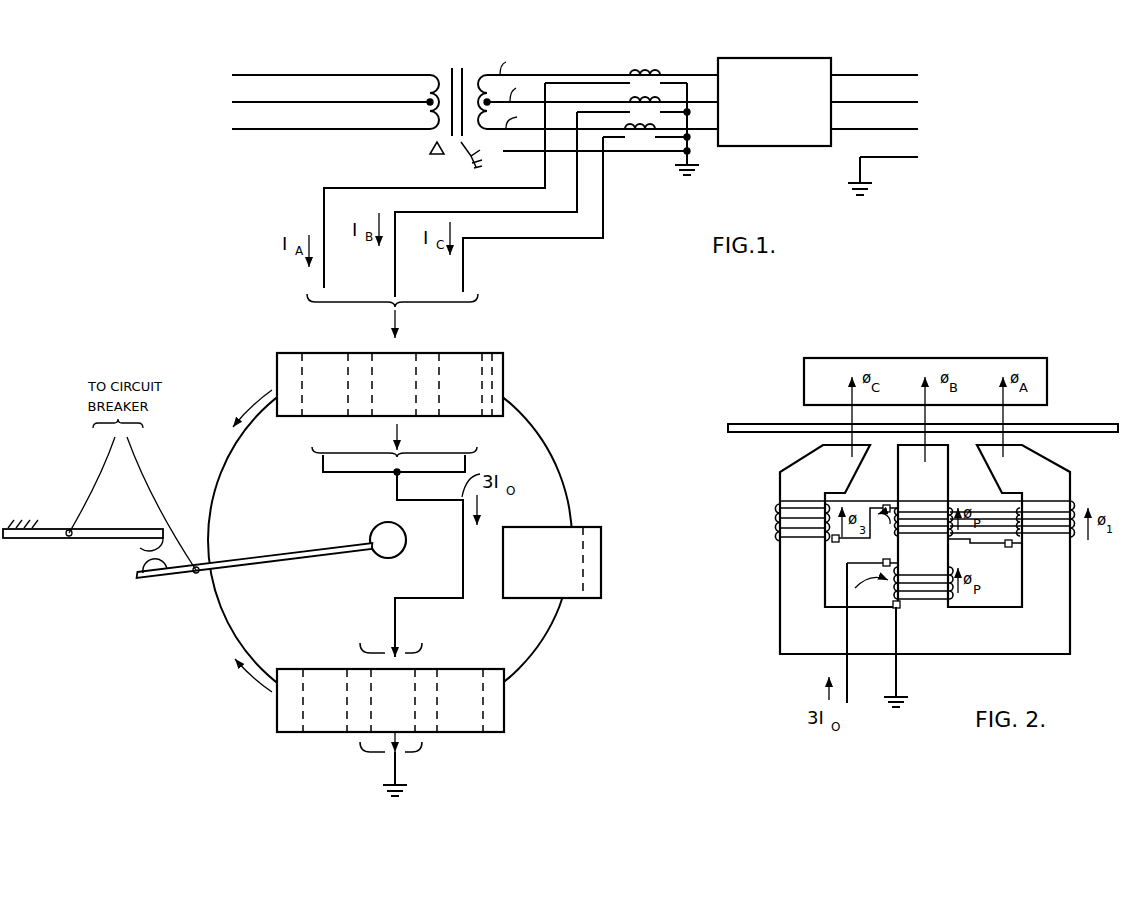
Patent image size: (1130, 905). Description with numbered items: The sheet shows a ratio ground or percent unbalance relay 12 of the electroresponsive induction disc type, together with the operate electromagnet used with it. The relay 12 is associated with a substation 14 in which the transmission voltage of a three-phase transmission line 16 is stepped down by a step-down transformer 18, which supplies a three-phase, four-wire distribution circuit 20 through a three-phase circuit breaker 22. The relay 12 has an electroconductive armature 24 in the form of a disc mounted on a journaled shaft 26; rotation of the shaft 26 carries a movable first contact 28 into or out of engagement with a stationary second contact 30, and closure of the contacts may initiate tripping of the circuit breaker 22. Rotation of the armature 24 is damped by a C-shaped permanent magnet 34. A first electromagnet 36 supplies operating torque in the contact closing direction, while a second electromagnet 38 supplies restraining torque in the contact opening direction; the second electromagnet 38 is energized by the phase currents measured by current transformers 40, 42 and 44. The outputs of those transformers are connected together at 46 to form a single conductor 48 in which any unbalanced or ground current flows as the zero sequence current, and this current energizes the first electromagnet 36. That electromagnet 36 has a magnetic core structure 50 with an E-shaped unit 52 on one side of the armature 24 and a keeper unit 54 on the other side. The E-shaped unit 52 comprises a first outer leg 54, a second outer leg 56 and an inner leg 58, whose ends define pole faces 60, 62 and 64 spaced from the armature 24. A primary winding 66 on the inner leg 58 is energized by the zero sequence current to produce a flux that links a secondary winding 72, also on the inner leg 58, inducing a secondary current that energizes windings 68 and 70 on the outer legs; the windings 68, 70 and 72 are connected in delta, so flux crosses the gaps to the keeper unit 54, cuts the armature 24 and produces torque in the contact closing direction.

In FIG. 1, the ratio ground relay 12 is at (610, 485).
In FIG. 1, the substation 14 is at (570, 66).
In FIG. 1, the three-phase transmission line 16 is at (362, 72).
In FIG. 1, the step-down transformer 18 is at (450, 70).
In FIG. 1, the distribution circuit 20 is at (887, 72).
In FIG. 1, the circuit breaker 22 is at (772, 146).
In FIG. 1, the armature 24 is at (560, 446).
In FIG. 2, the armature 24 is at (1075, 424).
In FIG. 1, the shaft 26 is at (378, 527).
In FIG. 1, the first contact 28 is at (140, 574).
In FIG. 1, the second contact 30 is at (140, 548).
In FIG. 1, the C-shaped permanent magnet 34 is at (601, 555).
In FIG. 1, the first electromagnet 36 is at (551, 703).
In FIG. 2, the first electromagnet 36 is at (1109, 587).
In FIG. 1, the second electromagnet 38 is at (548, 371).
In FIG. 1, the current transformer 40 is at (632, 67).
In FIG. 1, the current transformer 42 is at (665, 96).
In FIG. 1, the current transformer 44 is at (624, 140).
In FIG. 1, the connection point 46 is at (395, 474).
In FIG. 1, the single conductor 48 is at (463, 564).
In FIG. 2, the magnetic core structure 50 is at (804, 375).
In FIG. 2, the E-shaped unit 52 is at (780, 614).
In FIG. 2, the keeper unit 54 is at (1047, 380).
In FIG. 2, the second outer leg 56 is at (1063, 630).
In FIG. 2, the inner leg 58 is at (948, 478).
In FIG. 2, the pole face 60 is at (830, 446).
In FIG. 2, the pole face 62 is at (1022, 446).
In FIG. 2, the pole face 64 is at (899, 446).
In FIG. 2, the primary winding 66 is at (949, 565).
In FIG. 2, the winding 68 is at (778, 507).
In FIG. 2, the winding 70 is at (1062, 535).
In FIG. 2, the secondary winding 72 is at (896, 539).